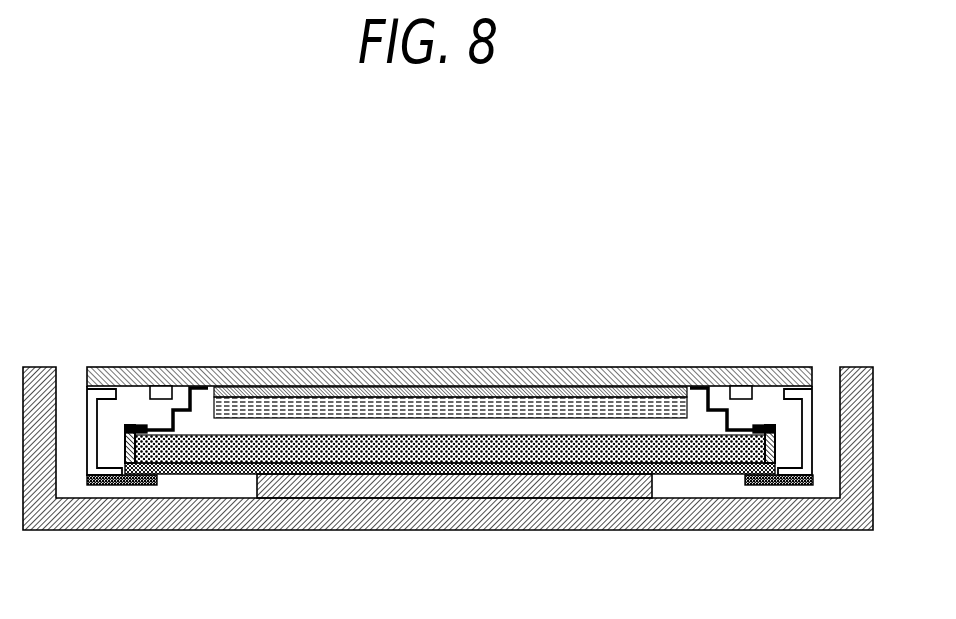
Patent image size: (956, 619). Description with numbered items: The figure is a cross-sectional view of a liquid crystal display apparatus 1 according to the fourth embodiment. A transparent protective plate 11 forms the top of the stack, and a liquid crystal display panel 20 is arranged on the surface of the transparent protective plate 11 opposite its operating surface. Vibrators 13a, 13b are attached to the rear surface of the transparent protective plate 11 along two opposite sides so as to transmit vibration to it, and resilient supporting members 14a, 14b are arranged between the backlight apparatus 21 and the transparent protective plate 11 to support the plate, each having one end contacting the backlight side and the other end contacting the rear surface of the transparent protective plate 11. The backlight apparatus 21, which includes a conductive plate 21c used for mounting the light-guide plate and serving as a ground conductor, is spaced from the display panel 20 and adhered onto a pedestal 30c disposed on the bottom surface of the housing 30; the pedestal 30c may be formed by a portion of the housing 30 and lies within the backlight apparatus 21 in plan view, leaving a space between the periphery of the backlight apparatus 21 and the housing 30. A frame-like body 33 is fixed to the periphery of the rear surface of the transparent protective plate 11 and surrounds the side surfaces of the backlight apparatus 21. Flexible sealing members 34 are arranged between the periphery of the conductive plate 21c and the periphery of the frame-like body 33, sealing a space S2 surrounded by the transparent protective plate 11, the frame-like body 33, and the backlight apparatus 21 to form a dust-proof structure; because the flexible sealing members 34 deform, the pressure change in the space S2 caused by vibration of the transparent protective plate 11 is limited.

The liquid crystal display apparatus 1 is at (668, 270).
The transparent protective plate 11 is at (243, 375).
The vibrator 13a is at (150, 386).
The vibrator 13b is at (757, 368).
The resilient supporting member 14a is at (185, 410).
The resilient supporting member 14b is at (716, 410).
The liquid crystal display panel 20 is at (309, 412).
The backlight apparatus 21 is at (337, 458).
The conductive plate 21c is at (233, 475).
The housing 30 is at (613, 517).
The pedestal 30c is at (547, 493).
The frame-like body 33 is at (85, 422).
The flexible sealing member 34 is at (102, 487).
The space S2 is at (103, 452).